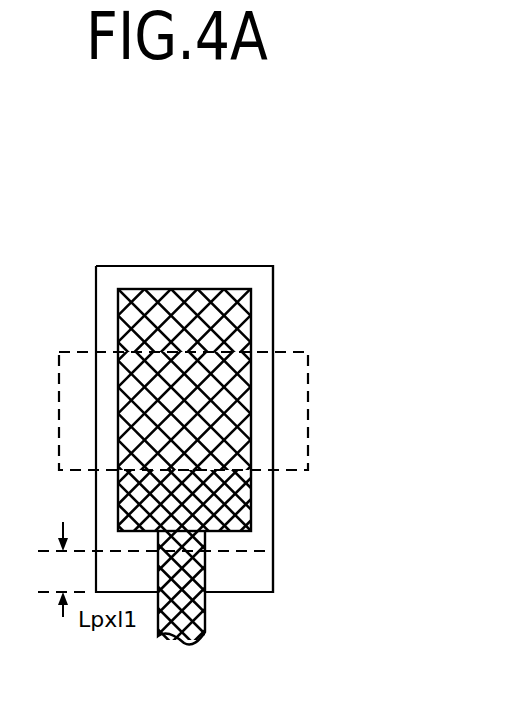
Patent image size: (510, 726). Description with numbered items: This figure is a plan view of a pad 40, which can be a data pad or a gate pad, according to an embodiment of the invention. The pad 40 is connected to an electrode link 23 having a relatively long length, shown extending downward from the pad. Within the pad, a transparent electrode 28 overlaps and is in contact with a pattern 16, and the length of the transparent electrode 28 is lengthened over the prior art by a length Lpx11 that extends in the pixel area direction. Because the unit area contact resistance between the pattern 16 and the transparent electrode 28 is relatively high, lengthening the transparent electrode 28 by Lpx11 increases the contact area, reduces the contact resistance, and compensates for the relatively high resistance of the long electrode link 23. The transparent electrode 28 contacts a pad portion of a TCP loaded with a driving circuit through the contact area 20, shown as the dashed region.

The pad 40 is at (239, 249).
The transparent electrode 28 is at (133, 272).
The pattern 16 is at (251, 316).
The contact area 20 is at (308, 400).
The electrode link 23 is at (205, 612).